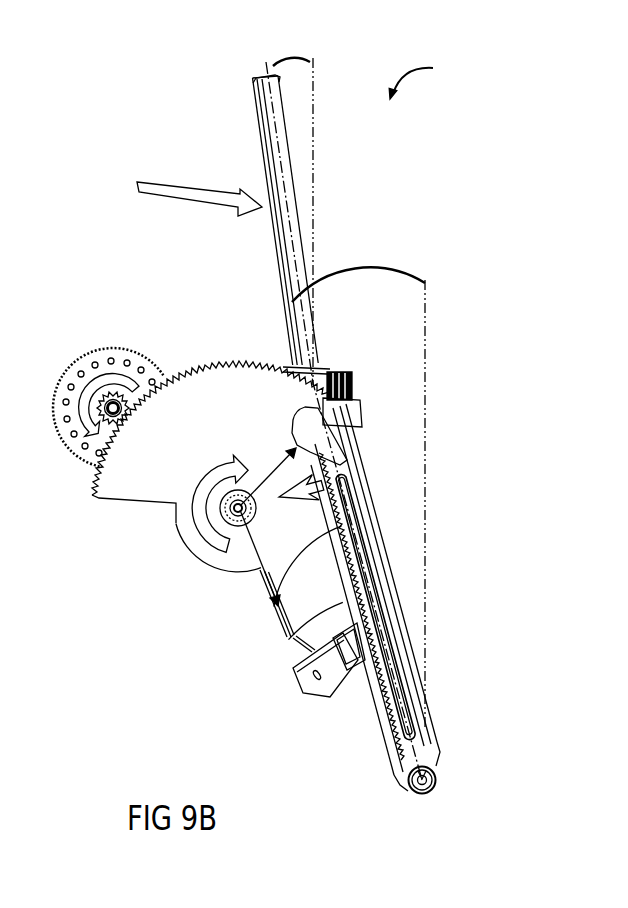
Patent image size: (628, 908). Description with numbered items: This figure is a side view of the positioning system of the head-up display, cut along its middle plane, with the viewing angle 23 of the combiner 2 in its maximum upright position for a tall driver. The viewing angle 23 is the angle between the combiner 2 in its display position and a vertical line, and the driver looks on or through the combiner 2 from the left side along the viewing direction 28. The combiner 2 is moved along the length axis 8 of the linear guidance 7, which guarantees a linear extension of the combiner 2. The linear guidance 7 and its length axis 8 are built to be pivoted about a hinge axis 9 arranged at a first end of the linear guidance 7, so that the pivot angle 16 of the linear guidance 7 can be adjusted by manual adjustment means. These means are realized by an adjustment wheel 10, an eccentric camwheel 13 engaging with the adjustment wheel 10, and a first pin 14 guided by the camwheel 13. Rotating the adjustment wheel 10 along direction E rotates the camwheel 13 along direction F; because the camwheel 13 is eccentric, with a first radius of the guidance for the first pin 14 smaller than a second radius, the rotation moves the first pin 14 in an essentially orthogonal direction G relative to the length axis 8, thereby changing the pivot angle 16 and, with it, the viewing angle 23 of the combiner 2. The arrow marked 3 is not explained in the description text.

The combiner 2 is at (278, 165).
The shifting device 3 is at (426, 74).
The linear guidance 7 is at (413, 695).
The length axis 8 is at (415, 748).
The hinge axis 9 is at (410, 778).
The adjustment wheel 10 is at (55, 408).
The eccentric camwheel 13 is at (230, 380).
The first pin 14 is at (340, 478).
The pivot angle 16 is at (372, 267).
The viewing angle 23 is at (287, 57).
The viewing direction 28 is at (190, 198).